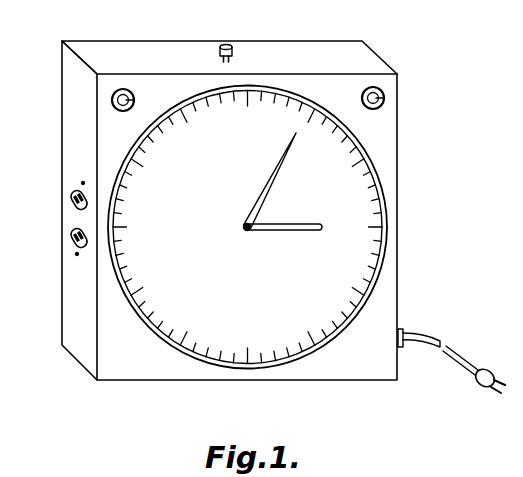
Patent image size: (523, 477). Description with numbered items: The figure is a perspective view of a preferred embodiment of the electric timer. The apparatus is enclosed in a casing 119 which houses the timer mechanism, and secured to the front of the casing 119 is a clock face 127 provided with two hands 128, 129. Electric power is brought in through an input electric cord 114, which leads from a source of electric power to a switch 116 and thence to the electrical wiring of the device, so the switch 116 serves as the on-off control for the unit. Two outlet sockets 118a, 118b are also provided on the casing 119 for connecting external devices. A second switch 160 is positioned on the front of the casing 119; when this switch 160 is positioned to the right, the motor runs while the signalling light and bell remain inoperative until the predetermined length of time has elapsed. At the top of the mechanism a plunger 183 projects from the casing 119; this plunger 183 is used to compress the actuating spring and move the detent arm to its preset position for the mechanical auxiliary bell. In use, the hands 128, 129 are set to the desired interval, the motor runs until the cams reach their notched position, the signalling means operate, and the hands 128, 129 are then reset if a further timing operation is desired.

The input electric cord 114 is at (430, 350).
The switch 116 is at (378, 89).
The outlet socket 118a is at (70, 197).
The outlet socket 118b is at (72, 236).
The casing 119 is at (352, 82).
The clock face 127 is at (361, 210).
The hand 128 is at (280, 168).
The hand 129 is at (273, 231).
The switch 160 is at (129, 89).
The plunger 183 is at (232, 50).